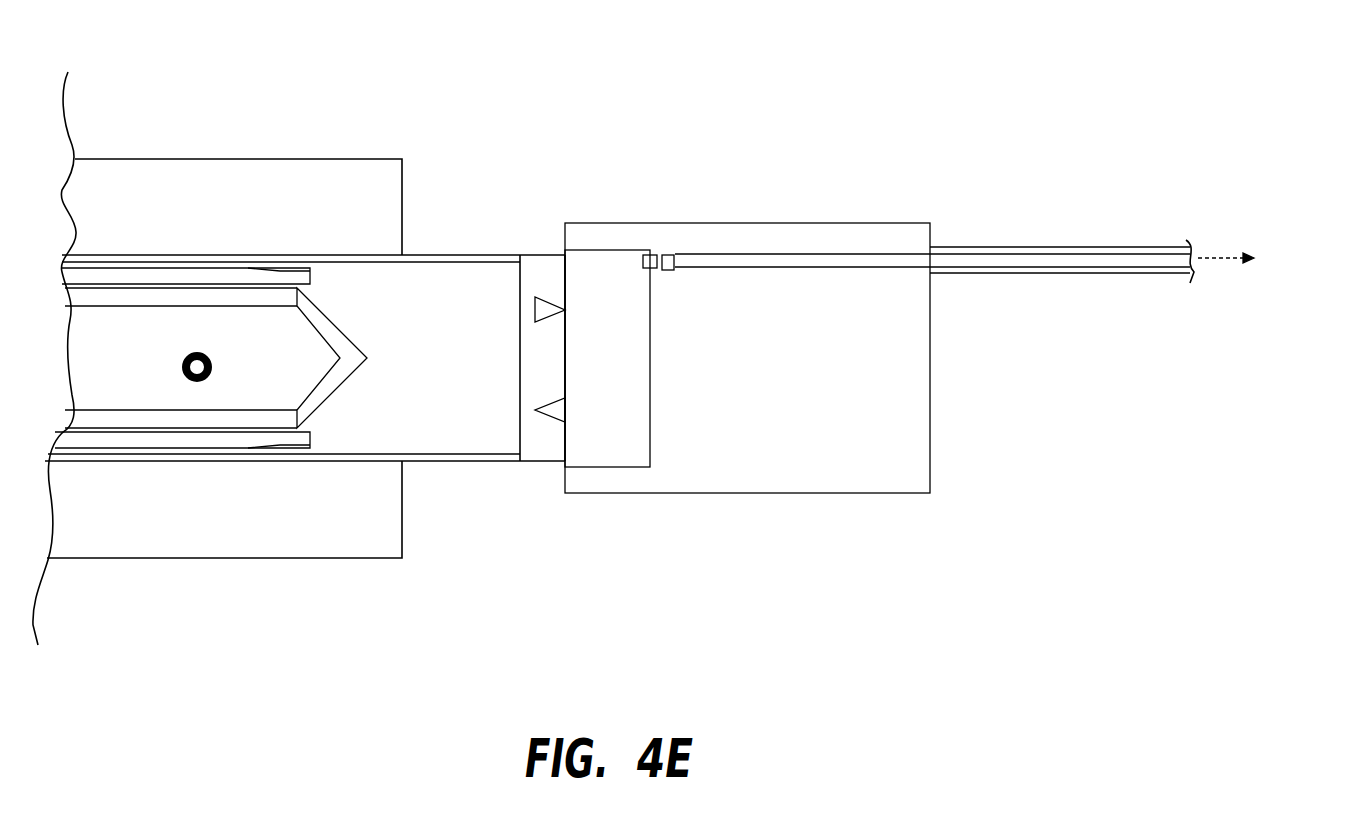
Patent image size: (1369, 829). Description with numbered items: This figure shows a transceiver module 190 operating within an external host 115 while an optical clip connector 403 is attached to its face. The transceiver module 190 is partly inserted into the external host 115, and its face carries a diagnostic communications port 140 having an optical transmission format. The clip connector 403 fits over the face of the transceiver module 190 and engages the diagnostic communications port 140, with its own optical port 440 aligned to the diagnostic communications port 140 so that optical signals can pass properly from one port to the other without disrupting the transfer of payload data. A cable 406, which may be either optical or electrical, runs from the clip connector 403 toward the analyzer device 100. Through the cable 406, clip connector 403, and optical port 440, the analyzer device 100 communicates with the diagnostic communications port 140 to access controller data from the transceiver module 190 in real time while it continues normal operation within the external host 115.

The external host 115 is at (286, 535).
The transceiver module 190 is at (459, 375).
The clip connector 403 is at (784, 474).
The diagnostic communications port 140 is at (645, 258).
The optical port 440 is at (670, 258).
The cable 406 is at (1036, 243).
The analyzer device 100 is at (1287, 309).